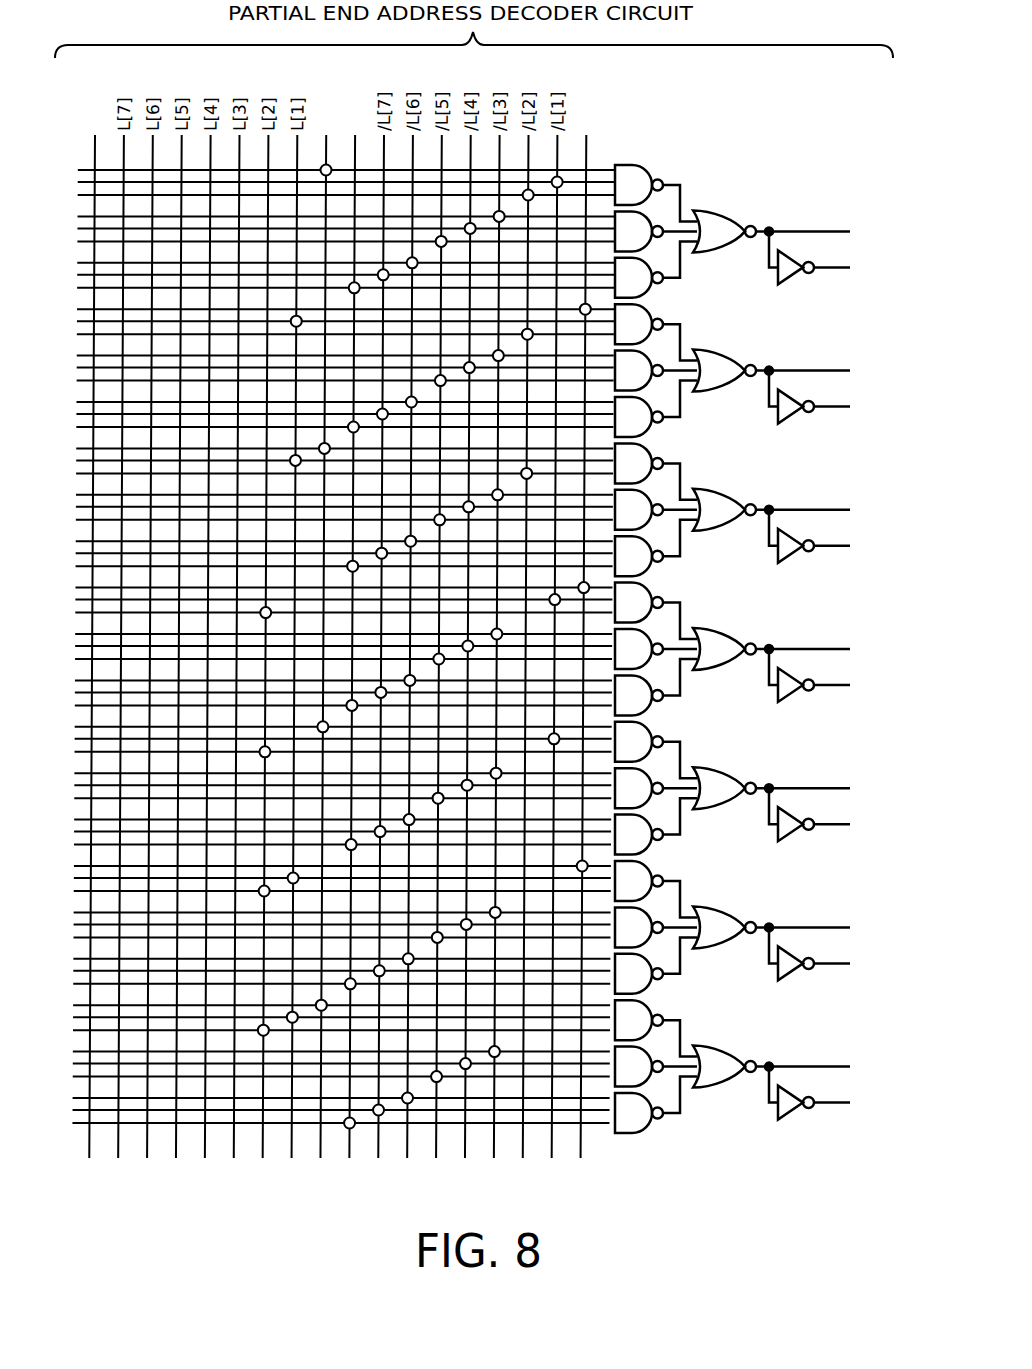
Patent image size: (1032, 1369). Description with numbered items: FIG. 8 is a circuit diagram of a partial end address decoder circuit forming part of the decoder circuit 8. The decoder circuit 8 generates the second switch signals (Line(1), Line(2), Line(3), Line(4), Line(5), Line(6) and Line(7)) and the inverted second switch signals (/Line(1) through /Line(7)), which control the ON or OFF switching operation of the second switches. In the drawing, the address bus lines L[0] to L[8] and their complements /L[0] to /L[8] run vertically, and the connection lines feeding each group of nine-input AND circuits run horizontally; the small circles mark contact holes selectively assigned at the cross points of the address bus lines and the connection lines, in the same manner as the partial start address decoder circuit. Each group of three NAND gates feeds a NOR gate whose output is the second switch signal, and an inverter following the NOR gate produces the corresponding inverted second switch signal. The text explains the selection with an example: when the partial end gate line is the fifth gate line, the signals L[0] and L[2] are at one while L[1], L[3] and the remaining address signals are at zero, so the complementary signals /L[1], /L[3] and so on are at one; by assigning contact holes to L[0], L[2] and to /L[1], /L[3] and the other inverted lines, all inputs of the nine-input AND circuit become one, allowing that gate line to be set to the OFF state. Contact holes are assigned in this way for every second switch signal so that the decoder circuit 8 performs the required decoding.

The address line L[0] and complement /L[0] 0 is at (453, 625).
The Line(1) decoder output stage (NOR gate and inverter) 1 is at (779, 239).
The Line(2) decoder output stage (NOR gate and inverter) 2 is at (779, 378).
The Line(3) decoder output stage (NOR gate and inverter) 3 is at (779, 517).
The Line(4) decoder output stage (NOR gate and inverter) 4 is at (779, 657).
The Line(5) decoder output stage (NOR gate and inverter) 5 is at (779, 796).
The Line(6) decoder output stage (NOR gate and inverter) 6 is at (779, 935).
The Line(7) decoder output stage (NOR gate and inverter) 7 is at (779, 1074).
The decoder circuit 8 is at (222, 625).